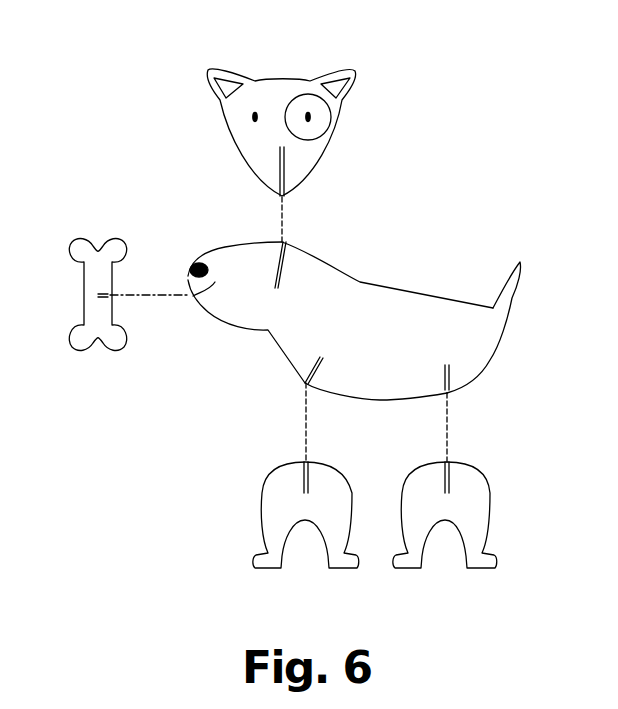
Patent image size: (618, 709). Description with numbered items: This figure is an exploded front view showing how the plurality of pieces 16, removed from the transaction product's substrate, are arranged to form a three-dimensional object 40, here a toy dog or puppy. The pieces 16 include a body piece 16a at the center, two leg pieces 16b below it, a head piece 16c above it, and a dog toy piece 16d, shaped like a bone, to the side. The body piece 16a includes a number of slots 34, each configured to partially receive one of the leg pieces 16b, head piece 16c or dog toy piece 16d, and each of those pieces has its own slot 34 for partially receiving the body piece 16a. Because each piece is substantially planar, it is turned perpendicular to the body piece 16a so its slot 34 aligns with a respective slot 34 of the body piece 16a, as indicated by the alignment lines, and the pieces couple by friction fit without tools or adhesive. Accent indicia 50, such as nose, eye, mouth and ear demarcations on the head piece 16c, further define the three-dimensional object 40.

The three-dimensional object 40 is at (177, 58).
The head piece 16c is at (278, 80).
The accent indicia 50 is at (275, 131).
The plurality of pieces 16 is at (494, 340).
The body piece 16a is at (510, 291).
The slots 34 is at (445, 376).
The leg pieces 16b is at (334, 572).
The dog toy pieces 16d is at (80, 343).